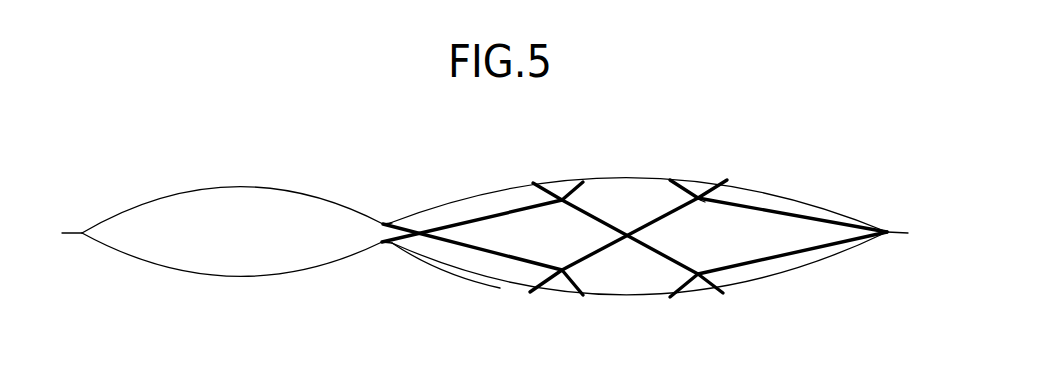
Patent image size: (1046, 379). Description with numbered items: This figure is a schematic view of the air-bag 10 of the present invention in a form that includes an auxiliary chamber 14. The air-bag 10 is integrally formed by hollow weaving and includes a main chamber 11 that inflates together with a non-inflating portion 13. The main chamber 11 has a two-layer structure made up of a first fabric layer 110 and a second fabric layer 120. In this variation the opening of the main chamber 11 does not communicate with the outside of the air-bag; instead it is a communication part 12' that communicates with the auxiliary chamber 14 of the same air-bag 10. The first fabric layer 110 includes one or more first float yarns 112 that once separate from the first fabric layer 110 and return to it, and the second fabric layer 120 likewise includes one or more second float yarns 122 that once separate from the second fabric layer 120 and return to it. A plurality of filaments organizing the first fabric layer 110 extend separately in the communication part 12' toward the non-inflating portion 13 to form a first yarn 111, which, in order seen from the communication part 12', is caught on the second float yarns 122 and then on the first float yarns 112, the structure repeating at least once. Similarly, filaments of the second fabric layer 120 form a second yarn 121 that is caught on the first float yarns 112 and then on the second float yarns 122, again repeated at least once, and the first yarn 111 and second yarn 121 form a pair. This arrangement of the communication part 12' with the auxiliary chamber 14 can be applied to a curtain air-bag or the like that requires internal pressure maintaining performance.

The air-bag 10 is at (800, 183).
The main chamber 11 is at (725, 232).
The communication part 12' is at (372, 191).
The non-inflating portion 13 is at (902, 233).
The auxiliary chamber 14 is at (235, 223).
The first fabric layer 110 is at (442, 190).
The first yarn 111 is at (523, 258).
The first float yarns 112 is at (692, 182).
The second fabric layer 120 is at (436, 279).
The second yarn 121 is at (470, 215).
The second float yarns 122 is at (640, 289).